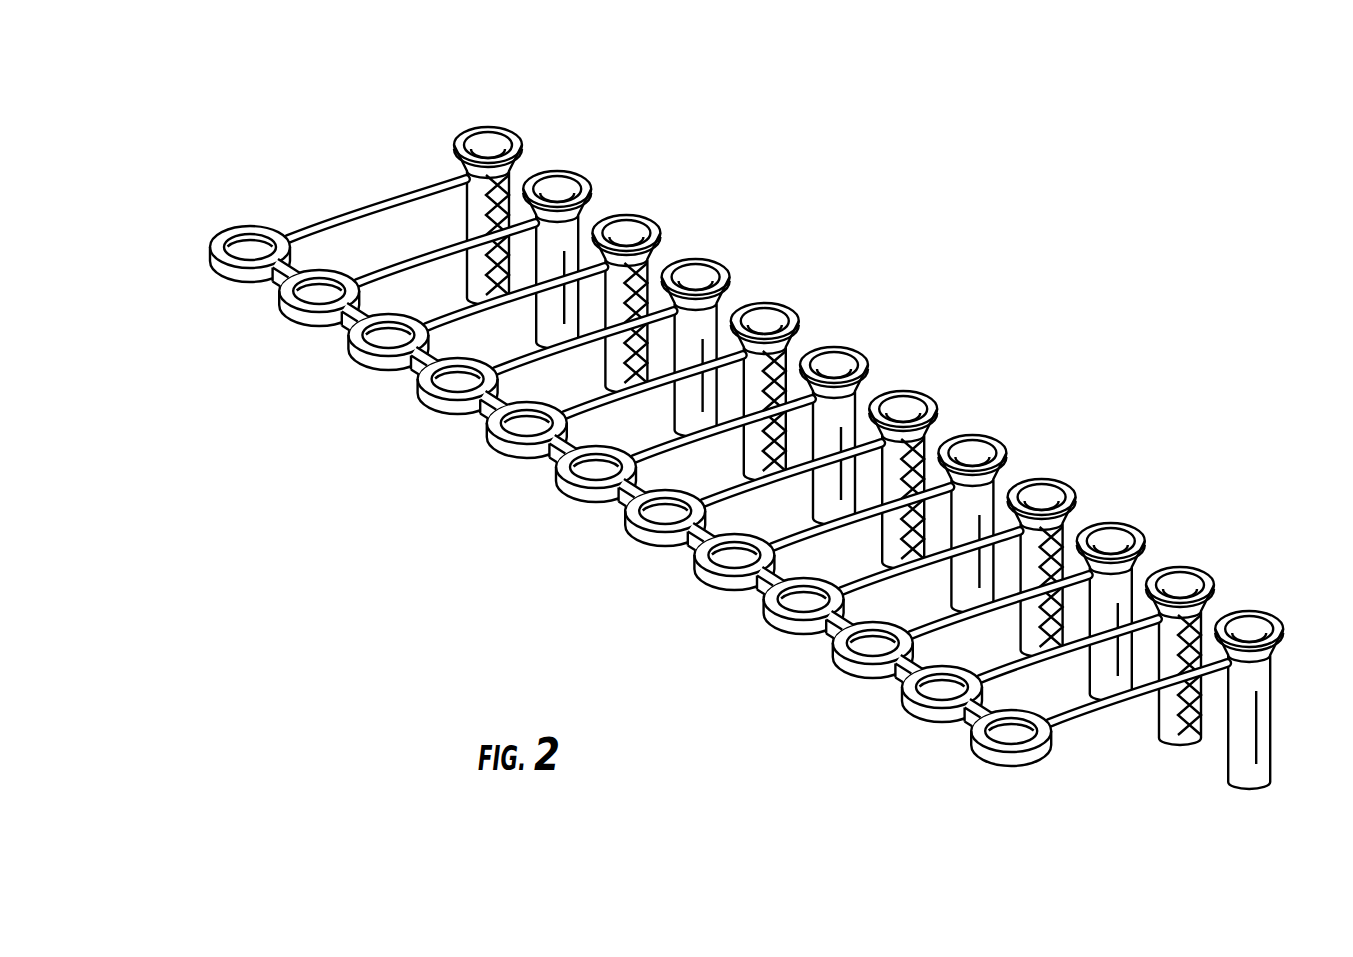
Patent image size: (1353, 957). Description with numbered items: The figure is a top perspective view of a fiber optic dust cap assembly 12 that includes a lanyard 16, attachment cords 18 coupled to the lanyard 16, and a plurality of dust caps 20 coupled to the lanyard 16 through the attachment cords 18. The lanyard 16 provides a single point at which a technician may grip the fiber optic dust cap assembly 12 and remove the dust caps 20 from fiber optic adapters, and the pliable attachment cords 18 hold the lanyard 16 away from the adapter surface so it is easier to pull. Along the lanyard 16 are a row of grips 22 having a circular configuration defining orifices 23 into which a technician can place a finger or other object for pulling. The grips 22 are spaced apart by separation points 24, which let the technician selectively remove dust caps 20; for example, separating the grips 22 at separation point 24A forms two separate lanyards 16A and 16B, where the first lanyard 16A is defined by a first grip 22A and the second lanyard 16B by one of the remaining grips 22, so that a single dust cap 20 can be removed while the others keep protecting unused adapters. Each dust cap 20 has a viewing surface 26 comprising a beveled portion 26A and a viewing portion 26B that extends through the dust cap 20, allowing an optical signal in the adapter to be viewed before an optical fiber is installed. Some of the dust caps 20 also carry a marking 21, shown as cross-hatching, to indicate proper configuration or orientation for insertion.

The fiber optic dust cap assembly 12 is at (779, 449).
The lanyard 16 is at (888, 862).
The first lanyard 16A is at (1023, 807).
The second lanyard 16B is at (923, 747).
The attachment cord 18 is at (398, 193).
The dust cap 20 is at (901, 441).
The marking 21 is at (506, 135).
The grip 22 is at (596, 474).
The first grip 22A is at (1037, 757).
The orifice 23 is at (693, 603).
The separation point 24 is at (547, 467).
The separation point 24A is at (967, 716).
The viewing surface 26 is at (1249, 589).
The beveled portion 26A is at (1178, 540).
The viewing portion 26B is at (1199, 547).